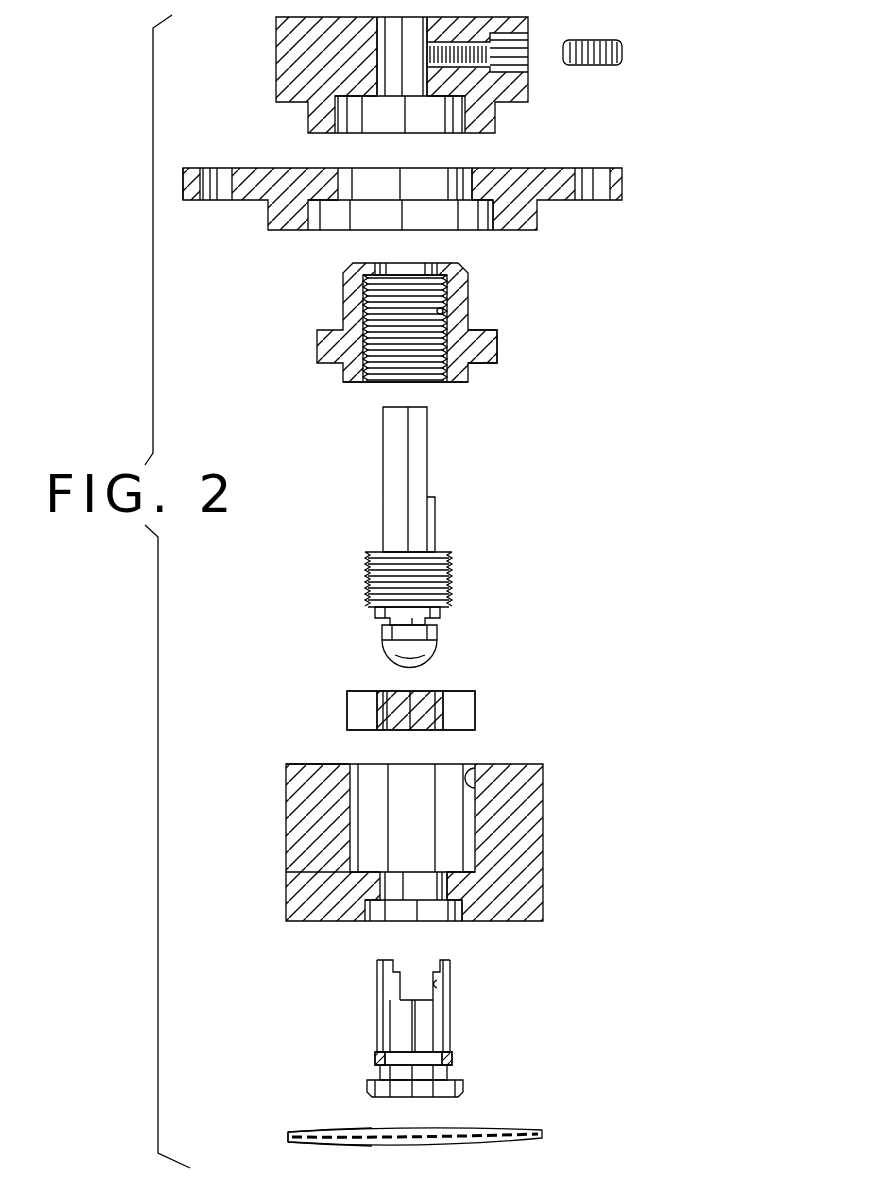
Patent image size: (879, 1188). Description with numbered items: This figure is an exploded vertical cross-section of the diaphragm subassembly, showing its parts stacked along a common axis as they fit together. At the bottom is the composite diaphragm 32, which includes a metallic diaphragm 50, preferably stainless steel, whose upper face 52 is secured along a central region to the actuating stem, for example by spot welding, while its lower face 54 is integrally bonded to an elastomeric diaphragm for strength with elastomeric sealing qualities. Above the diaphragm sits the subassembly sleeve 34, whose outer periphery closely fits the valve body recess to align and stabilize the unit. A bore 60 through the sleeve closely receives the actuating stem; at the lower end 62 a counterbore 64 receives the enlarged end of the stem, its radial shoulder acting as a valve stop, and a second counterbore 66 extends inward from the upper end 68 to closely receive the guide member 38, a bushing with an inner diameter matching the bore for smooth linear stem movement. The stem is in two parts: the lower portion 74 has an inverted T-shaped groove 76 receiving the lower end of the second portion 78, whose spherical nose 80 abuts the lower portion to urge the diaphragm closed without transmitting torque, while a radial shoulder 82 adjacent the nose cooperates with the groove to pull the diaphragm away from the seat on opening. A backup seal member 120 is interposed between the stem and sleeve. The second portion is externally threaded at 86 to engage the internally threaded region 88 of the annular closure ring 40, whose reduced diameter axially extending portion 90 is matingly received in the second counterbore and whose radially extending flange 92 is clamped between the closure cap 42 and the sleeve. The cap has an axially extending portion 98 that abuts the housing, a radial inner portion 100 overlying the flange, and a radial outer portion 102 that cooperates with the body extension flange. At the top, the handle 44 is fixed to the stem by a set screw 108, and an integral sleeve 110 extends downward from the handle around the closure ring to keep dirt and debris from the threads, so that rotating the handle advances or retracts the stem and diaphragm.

The composite diaphragm 32 is at (470, 1135).
The subassembly sleeve 34 is at (520, 826).
The guide member 38 is at (460, 697).
The annular closure ring 40 is at (343, 298).
The closure cap 42 is at (563, 171).
The handle 44 is at (302, 60).
The metallic diaphragm 50 is at (288, 1135).
The upper face 52 is at (305, 1132).
The lower face 54 is at (305, 1143).
The bore 60 is at (452, 886).
The lower end 62 is at (335, 890).
The counterbore 64 is at (452, 924).
The second counterbore 66 is at (471, 770).
The upper end 68 is at (318, 775).
The lower portion 74 is at (380, 982).
The T-shaped groove 76 is at (450, 984).
The second portion 78 is at (413, 526).
The spherical nose 80 is at (436, 648).
The radial shoulder 82 is at (436, 628).
The external threads 86 is at (454, 566).
The internally threaded region 88 is at (444, 311).
The axially extending portion 90 is at (361, 374).
The radially extending flange 92 is at (483, 350).
The axially extending portion 98 is at (525, 212).
The radial inner portion 100 is at (490, 186).
The radial outer portion 102 is at (190, 195).
The set screw 108 is at (620, 42).
The integral sleeve 110 is at (330, 124).
The secondary seal member 120 is at (455, 1059).